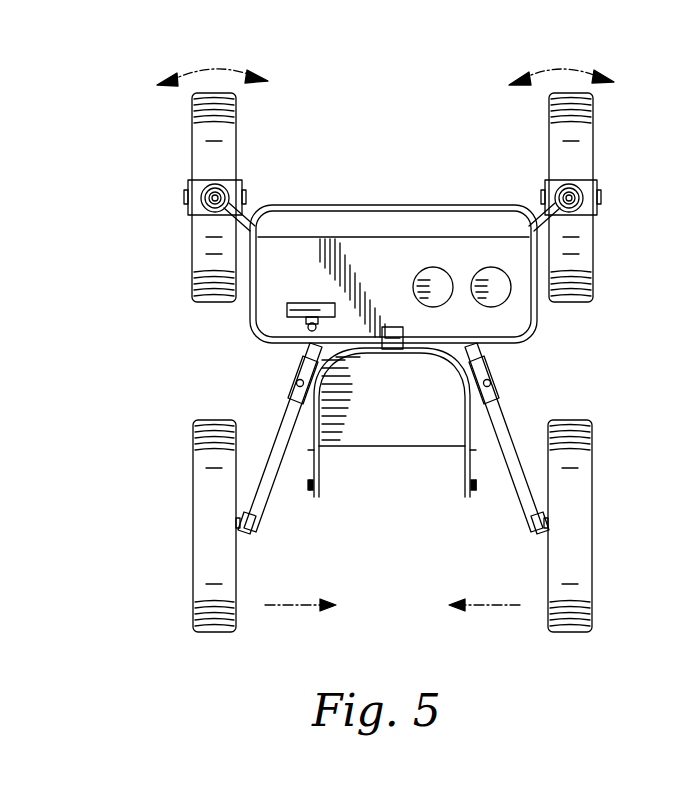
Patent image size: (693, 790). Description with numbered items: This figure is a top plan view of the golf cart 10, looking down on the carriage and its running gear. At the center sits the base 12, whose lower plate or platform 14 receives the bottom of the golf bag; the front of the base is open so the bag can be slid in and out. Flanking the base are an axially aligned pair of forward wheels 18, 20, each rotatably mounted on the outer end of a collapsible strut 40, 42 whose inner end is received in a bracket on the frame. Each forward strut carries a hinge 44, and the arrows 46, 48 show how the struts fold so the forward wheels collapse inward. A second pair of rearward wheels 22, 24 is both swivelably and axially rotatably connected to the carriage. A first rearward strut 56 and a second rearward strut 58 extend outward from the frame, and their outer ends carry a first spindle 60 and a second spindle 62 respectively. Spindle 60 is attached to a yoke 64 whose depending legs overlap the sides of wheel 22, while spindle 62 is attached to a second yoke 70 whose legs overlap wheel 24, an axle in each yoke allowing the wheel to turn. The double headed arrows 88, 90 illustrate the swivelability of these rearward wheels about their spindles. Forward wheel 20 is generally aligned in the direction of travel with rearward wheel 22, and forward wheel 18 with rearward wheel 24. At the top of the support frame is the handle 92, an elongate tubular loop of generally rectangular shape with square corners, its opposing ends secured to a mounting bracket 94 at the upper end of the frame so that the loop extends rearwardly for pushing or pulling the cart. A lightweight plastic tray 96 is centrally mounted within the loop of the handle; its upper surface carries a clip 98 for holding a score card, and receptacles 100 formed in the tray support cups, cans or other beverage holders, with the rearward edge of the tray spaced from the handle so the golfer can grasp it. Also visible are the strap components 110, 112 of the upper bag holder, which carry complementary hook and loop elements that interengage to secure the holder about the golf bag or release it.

The cart 10 is at (118, 350).
The base 12 is at (420, 450).
The platform 14 is at (370, 428).
The forward wheel 18 is at (193, 558).
The forward wheel 20 is at (593, 538).
The rearward wheel 22 is at (593, 286).
The rearward wheel 24 is at (192, 276).
The collapsible strut 40 is at (275, 435).
The collapsible strut 42 is at (515, 445).
The hinge 44 is at (290, 375).
The arrow 46 is at (282, 605).
The arrow 48 is at (495, 605).
The first rearward strut 56 is at (540, 224).
The second rearward strut 58 is at (246, 212).
The first spindle 60 is at (580, 186).
The second spindle 62 is at (205, 190).
The yoke 64 is at (597, 210).
The second yoke 70 is at (190, 212).
The double headed arrow 88 is at (217, 68).
The double headed arrow 90 is at (560, 68).
The handle 92 is at (386, 205).
The mounting bracket 94 is at (392, 327).
The tray 96 is at (340, 245).
The clip 98 is at (305, 303).
The receptacles 100 is at (475, 270).
The strap component 110 is at (473, 470).
The strap component 112 is at (320, 470).